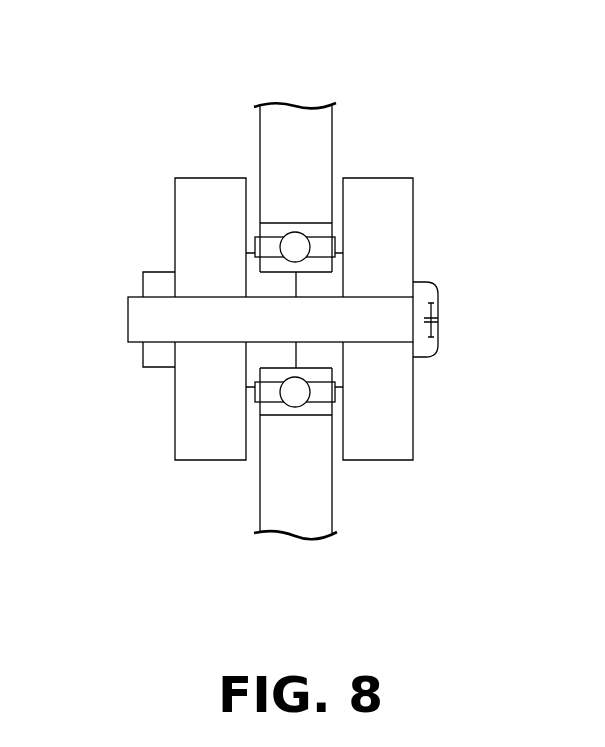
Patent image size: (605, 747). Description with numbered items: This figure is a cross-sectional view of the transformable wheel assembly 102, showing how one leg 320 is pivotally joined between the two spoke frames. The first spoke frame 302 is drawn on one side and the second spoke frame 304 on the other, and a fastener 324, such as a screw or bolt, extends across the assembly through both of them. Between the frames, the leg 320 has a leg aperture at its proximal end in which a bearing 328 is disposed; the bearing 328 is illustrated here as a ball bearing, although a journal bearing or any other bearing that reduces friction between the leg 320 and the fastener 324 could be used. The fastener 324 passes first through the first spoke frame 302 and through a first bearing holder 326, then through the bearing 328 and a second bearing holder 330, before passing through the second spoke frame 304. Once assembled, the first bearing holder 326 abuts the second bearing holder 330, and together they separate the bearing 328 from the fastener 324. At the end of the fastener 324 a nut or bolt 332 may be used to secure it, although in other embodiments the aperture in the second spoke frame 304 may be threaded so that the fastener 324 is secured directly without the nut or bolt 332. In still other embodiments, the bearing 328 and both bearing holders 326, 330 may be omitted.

The transformable wheel assembly 102 is at (470, 76).
The first spoke frame 302 is at (373, 405).
The second spoke frame 304 is at (202, 435).
The leg 320 is at (298, 158).
The fastener 324 is at (375, 320).
The first bearing holder 326 is at (318, 285).
The bearing 328 is at (275, 232).
The second bearing holder 330 is at (263, 285).
The nut or bolt 332 is at (158, 358).